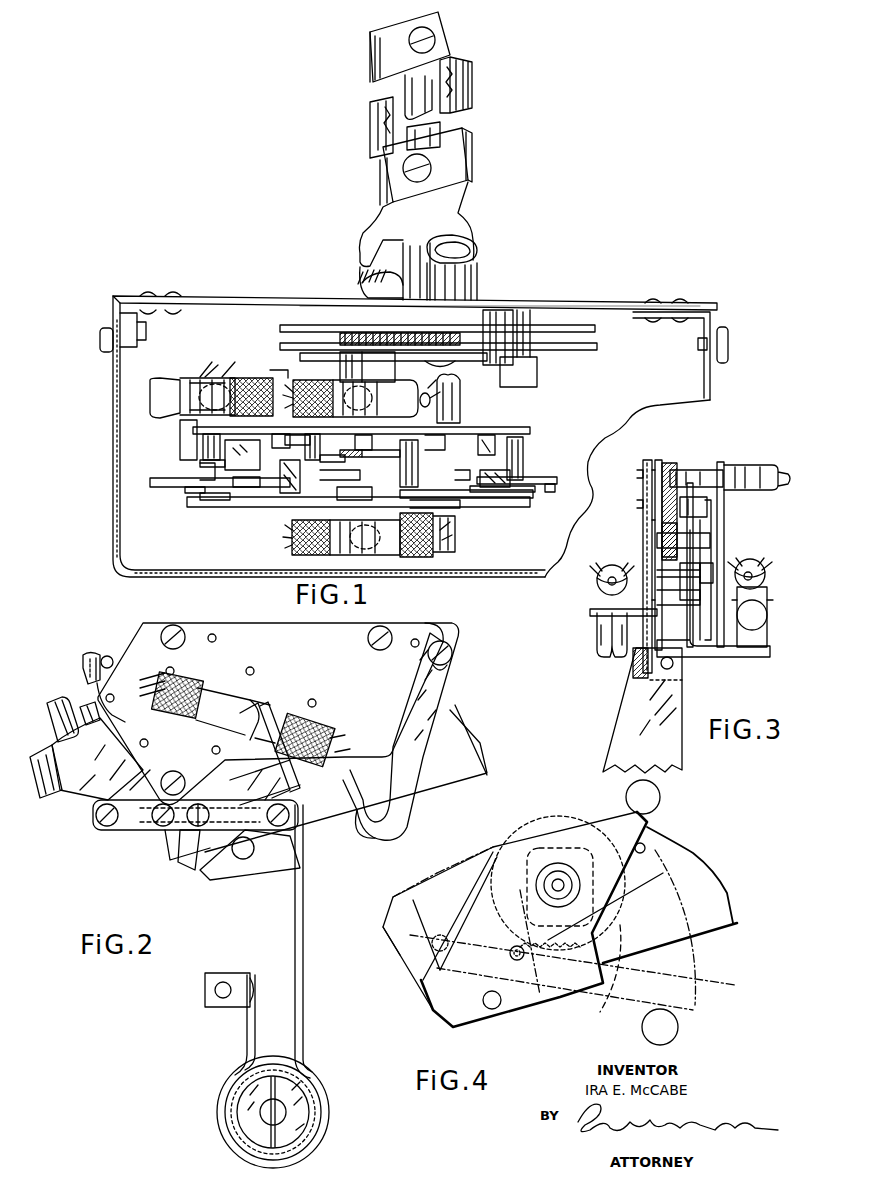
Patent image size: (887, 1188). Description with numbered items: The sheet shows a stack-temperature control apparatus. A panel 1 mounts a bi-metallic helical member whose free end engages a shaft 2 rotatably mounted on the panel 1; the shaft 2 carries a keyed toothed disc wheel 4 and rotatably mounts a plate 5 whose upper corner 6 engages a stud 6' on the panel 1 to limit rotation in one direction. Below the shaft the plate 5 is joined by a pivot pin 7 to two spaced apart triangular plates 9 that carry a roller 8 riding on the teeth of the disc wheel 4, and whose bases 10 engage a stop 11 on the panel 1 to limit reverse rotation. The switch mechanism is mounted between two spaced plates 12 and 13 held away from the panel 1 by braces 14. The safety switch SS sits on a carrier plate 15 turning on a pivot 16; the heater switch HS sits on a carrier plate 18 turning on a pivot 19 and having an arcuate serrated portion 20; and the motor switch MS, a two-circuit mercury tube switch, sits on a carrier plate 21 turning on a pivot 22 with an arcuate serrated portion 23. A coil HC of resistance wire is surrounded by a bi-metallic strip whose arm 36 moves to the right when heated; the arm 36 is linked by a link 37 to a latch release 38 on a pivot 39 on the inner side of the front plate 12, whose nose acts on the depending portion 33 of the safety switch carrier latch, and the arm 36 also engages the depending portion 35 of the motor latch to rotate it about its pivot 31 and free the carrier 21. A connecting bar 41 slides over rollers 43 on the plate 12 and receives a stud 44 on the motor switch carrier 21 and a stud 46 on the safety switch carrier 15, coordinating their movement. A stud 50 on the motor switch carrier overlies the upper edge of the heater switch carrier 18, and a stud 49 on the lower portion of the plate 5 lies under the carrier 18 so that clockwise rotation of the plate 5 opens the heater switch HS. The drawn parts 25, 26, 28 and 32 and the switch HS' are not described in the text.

In FIG. 1, the panel 1 is at (583, 303).
In FIG. 1, the shaft 2 is at (392, 98).
In FIG. 4, the shaft 2 is at (553, 882).
In FIG. 1, the toothed disc wheel 4 is at (340, 347).
In FIG. 4, the toothed disc wheel 4 is at (603, 1008).
In FIG. 1, the plate 5 is at (455, 360).
In FIG. 2, the plate 5 is at (215, 862).
In FIG. 4, the plate 5 is at (472, 1010).
In FIG. 4, the upper corner 6 is at (549, 919).
In FIG. 1, the stud 6' is at (529, 344).
In FIG. 4, the stud 6' is at (622, 797).
In FIG. 4, the pivot pin 7 is at (525, 985).
In FIG. 4, the roller 8 is at (452, 933).
In FIG. 1, the plates 9 is at (282, 344).
In FIG. 2, the plates 9 is at (445, 735).
In FIG. 4, the plates 9 is at (683, 870).
In FIG. 4, the bases 10 is at (698, 940).
In FIG. 1, the stop 11 is at (512, 375).
In FIG. 4, the stop 11 is at (665, 1025).
In FIG. 1, the front plate 12 is at (233, 507).
In FIG. 3, the front plate 12 is at (648, 460).
In FIG. 2, the front plate 12 is at (150, 638).
In FIG. 1, the rear supporting plate 13 is at (193, 431).
In FIG. 3, the rear supporting plate 13 is at (720, 462).
In FIG. 1, the braces 14 is at (285, 410).
In FIG. 3, the braces 14 is at (748, 470).
In FIG. 3, the carrier plate 15 is at (770, 606).
In FIG. 2, the pivot 16 is at (113, 694).
In FIG. 1, the carrier plate 18 is at (395, 378).
In FIG. 3, the carrier plate 18 is at (715, 655).
In FIG. 2, the carrier plate 18 is at (200, 845).
In FIG. 3, the pivot 19 is at (712, 568).
In FIG. 1, the arcuate serrated portion 20 is at (360, 457).
In FIG. 1, the carrier plate 21 is at (455, 500).
In FIG. 3, the carrier plate 21 is at (590, 612).
In FIG. 3, the pivot 22 is at (705, 540).
In FIG. 2, the pivot 22 is at (311, 702).
In FIG. 1, the arcuate serrated portion 23 is at (475, 475).
In FIG. 1, the hole 25 is at (322, 445).
In FIG. 2, the hole 25 is at (217, 637).
In FIG. 1, the post 26 is at (295, 435).
In FIG. 2, the hole 28 is at (212, 751).
In FIG. 1, the pivot 31 is at (523, 455).
In FIG. 3, the pivot 31 is at (703, 470).
In FIG. 2, the pivot 31 is at (412, 647).
In FIG. 1, the bar 32 is at (520, 478).
In FIG. 1, the depending portion 33 is at (285, 495).
In FIG. 1, the depending portion 35 is at (485, 505).
In FIG. 2, the depending portion 35 is at (388, 832).
In FIG. 3, the arm 36 is at (640, 717).
In FIG. 2, the arm 36 is at (296, 882).
In FIG. 2, the link 37 is at (130, 830).
In FIG. 1, the latch release 38 is at (160, 487).
In FIG. 2, the latch release 38 is at (83, 797).
In FIG. 1, the pivot 39 is at (248, 477).
In FIG. 2, the pivot 39 is at (148, 742).
In FIG. 1, the connecting bar 41 is at (187, 493).
In FIG. 2, the connecting bar 41 is at (86, 658).
In FIG. 1, the rollers 43 is at (360, 490).
In FIG. 2, the rollers 43 is at (174, 668).
In FIG. 1, the stud 44 is at (440, 488).
In FIG. 1, the stud 46 is at (210, 448).
In FIG. 2, the stud 46 is at (106, 657).
In FIG. 1, the stud 49 is at (340, 367).
In FIG. 2, the stud 49 is at (243, 855).
In FIG. 4, the stud 49 is at (492, 1010).
In FIG. 1, the stud 50 is at (418, 465).
In FIG. 3, the stud 50 is at (708, 503).
In FIG. 1, the safety switch SS is at (165, 395).
In FIG. 3, the safety switch SS is at (768, 575).
In FIG. 2, the safety switch SS is at (55, 710).
In FIG. 1, the heater switch HS is at (369, 474).
In FIG. 3, the heater switch HS is at (692, 610).
In FIG. 2, the thermostatic switch HS' is at (296, 753).
In FIG. 1, the motor switch MS is at (318, 540).
In FIG. 2, the motor switch MS is at (190, 690).
In FIG. 2, the heating coil HC is at (240, 1078).